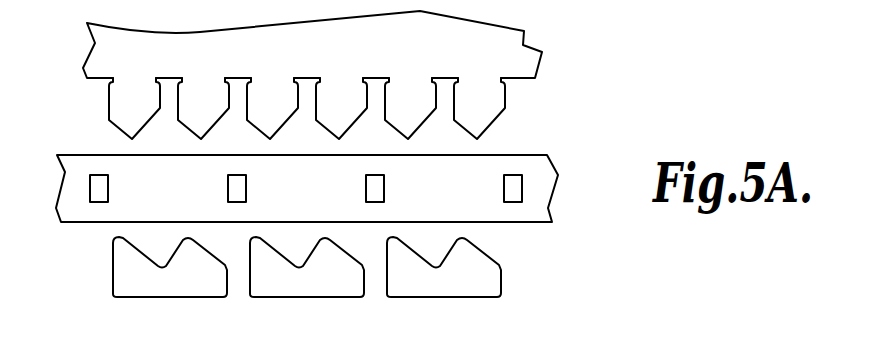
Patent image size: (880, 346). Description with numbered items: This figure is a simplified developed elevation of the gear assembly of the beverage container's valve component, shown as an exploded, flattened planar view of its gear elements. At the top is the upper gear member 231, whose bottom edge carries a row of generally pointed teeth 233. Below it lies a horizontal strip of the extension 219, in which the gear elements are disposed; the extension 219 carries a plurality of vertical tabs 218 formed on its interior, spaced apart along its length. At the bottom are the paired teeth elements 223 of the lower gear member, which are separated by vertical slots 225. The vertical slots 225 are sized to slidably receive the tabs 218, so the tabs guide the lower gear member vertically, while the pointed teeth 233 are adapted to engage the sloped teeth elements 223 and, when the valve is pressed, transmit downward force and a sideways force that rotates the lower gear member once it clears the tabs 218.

The upper gear member 231 is at (462, 51).
The pointed teeth 233 is at (493, 93).
The extension 219 is at (462, 199).
The tabs 218 is at (515, 190).
The teeth elements 223 is at (120, 275).
The vertical slots 225 is at (237, 285).